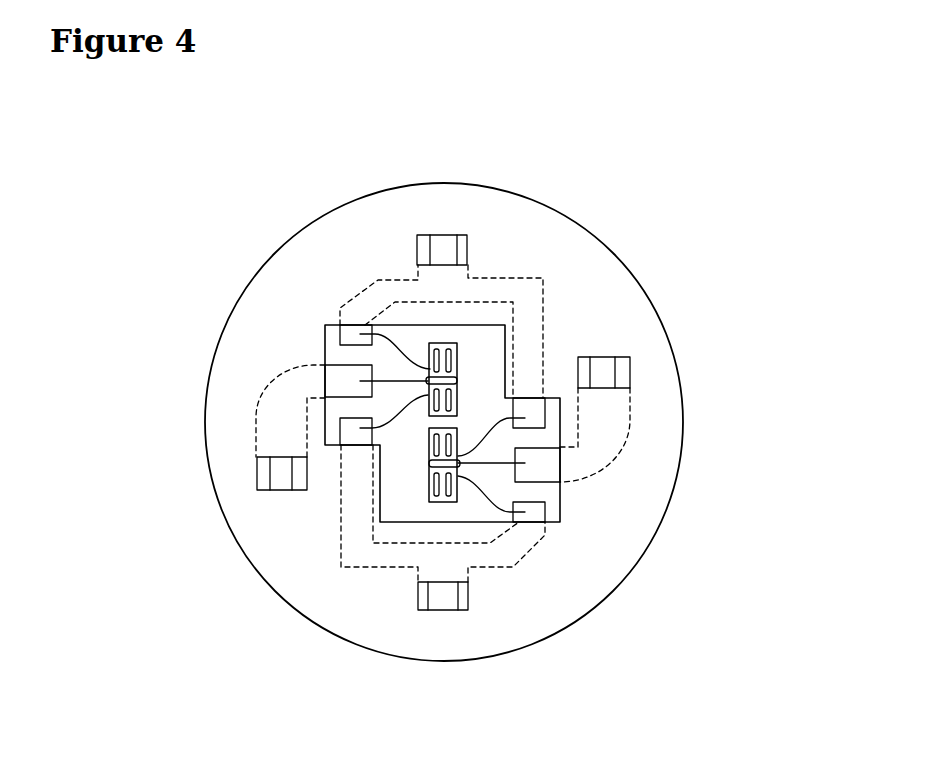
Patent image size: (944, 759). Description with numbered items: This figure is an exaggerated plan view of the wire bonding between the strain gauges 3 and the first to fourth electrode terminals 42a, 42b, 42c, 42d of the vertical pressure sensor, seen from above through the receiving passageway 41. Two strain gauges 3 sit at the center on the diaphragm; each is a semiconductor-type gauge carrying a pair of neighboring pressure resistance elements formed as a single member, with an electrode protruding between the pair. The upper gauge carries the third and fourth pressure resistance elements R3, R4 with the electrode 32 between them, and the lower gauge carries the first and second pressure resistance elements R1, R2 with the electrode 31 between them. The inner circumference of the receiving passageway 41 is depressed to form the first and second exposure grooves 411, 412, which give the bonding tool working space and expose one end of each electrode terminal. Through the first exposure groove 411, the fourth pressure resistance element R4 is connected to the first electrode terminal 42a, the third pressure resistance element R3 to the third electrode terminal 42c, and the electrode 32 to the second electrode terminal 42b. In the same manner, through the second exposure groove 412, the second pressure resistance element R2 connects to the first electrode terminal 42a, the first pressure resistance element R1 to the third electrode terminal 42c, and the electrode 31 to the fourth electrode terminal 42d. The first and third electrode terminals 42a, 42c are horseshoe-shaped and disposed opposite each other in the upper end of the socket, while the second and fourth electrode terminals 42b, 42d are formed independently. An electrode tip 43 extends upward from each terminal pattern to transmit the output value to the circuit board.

The strain gauges 3 is at (556, 149).
The electrode 31 is at (350, 556).
The electrode 32 is at (537, 288).
The first pressure resistance element R1 is at (447, 497).
The second pressure resistance element R2 is at (430, 429).
The third pressure resistance element R3 is at (458, 415).
The fourth pressure resistance element R4 is at (441, 348).
The main body of flexible circuit board 41 is at (417, 405).
The first exposure groove 411 is at (344, 347).
The second exposure groove 412 is at (542, 503).
The first electrode terminal 42a is at (396, 272).
The second electrode terminal 42b is at (251, 431).
The third electrode terminal 42c is at (520, 567).
The fourth electrode terminal 42d is at (638, 418).
The electrode tip 43 is at (444, 246).